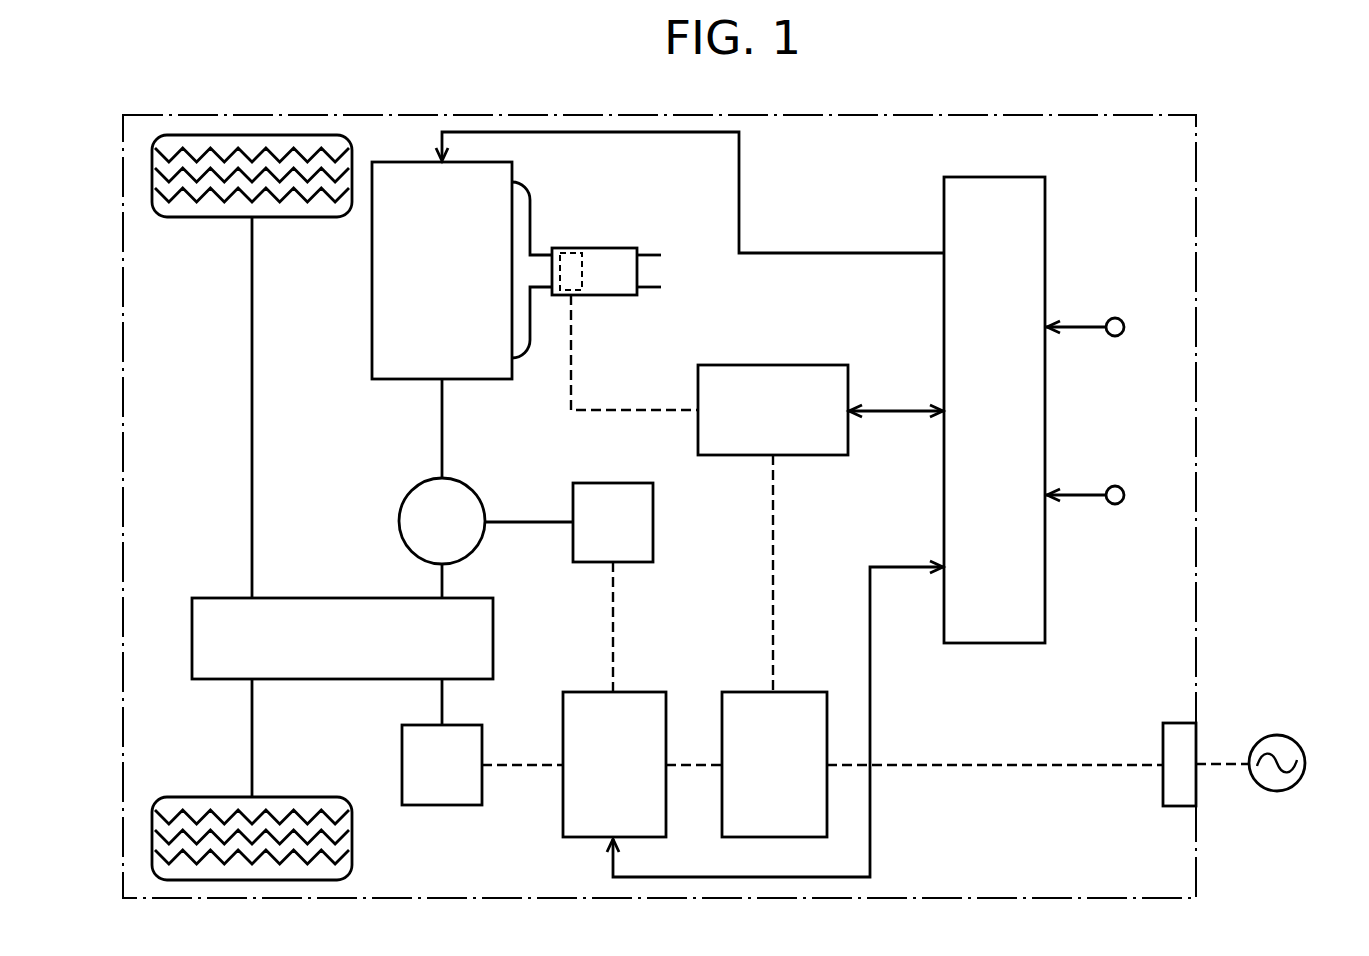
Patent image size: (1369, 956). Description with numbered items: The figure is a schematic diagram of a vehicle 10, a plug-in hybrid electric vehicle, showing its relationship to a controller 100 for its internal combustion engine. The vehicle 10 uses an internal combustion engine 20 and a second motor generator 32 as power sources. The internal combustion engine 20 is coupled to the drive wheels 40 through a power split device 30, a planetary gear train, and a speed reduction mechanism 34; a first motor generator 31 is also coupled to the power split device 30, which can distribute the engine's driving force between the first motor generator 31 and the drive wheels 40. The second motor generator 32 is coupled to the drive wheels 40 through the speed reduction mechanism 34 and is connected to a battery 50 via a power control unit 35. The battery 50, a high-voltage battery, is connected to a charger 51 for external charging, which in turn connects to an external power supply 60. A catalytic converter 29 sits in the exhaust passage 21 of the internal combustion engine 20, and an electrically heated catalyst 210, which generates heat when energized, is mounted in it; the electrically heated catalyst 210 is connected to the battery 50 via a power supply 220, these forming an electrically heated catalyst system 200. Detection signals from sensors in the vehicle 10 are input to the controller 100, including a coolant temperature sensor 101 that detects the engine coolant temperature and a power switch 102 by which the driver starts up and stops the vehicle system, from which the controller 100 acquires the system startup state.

The vehicle 10 is at (365, 115).
The drive wheels 40 is at (280, 135).
The internal combustion engine 20 is at (372, 312).
The catalytic converter 29 is at (615, 248).
The electrically heated catalyst 210 is at (572, 252).
The exhaust passage 21 is at (648, 275).
The electrically heated catalyst system 200 is at (740, 326).
The power supply 220 is at (790, 365).
The controller 100 is at (1045, 225).
The coolant temperature sensor 101 is at (1115, 318).
The power switch 102 is at (1115, 504).
The power split device 30 is at (464, 481).
The first motor generator 31 is at (653, 522).
The speed reduction mechanism 34 is at (307, 598).
The second motor generator 32 is at (442, 806).
The power control unit 35 is at (563, 805).
The battery 50 is at (797, 692).
The charger 51 is at (1163, 783).
The external power supply 60 is at (1297, 742).